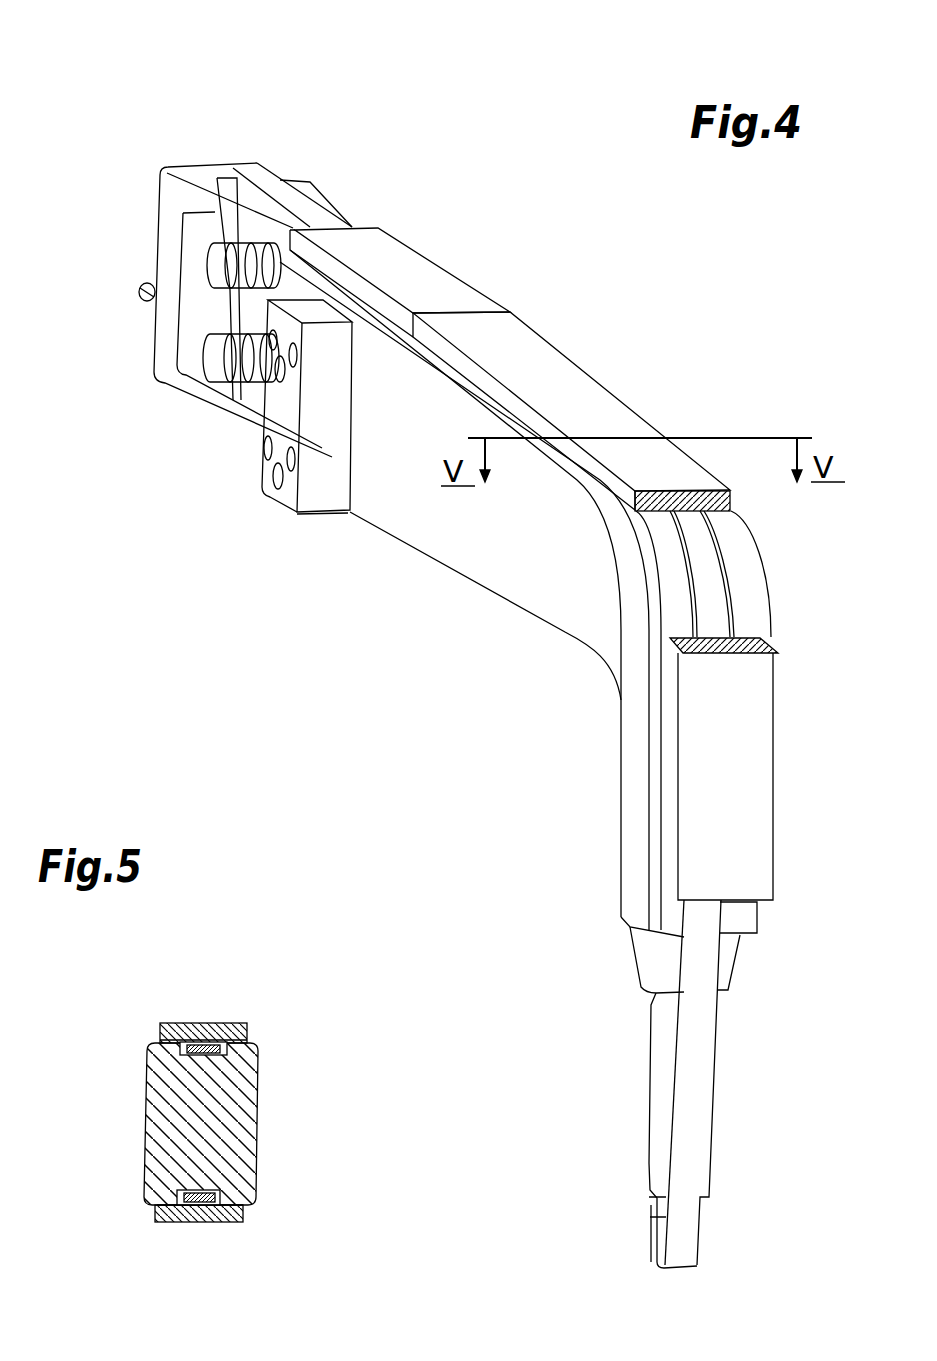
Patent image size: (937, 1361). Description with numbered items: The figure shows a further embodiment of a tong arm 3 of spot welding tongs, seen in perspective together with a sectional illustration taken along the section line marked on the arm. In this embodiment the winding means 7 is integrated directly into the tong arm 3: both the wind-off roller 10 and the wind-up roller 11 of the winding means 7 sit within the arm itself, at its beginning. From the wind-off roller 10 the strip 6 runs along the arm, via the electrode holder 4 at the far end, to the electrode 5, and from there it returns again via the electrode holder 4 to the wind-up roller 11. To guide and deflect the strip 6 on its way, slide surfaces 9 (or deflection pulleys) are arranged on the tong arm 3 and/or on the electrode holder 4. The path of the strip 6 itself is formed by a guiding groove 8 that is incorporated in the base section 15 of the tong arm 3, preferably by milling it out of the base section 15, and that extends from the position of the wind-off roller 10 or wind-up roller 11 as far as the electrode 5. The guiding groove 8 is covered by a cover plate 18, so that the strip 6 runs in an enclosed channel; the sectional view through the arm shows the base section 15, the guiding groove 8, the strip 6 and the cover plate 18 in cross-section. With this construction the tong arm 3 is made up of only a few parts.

In FIG. 4, the tong arm 3 is at (316, 584).
In FIG. 4, the electrode holder 4 is at (658, 962).
In FIG. 4, the electrode 5 is at (657, 1228).
In FIG. 4, the strip 6 is at (232, 200).
In FIG. 5, the strip 6 is at (202, 1047).
In FIG. 4, the winding means 7 is at (163, 431).
In FIG. 4, the guiding groove 8 is at (703, 595).
In FIG. 5, the guiding groove 8 is at (166, 1038).
In FIG. 4, the slide surfaces 9 is at (260, 201).
In FIG. 5, the slide surfaces 9 is at (230, 1043).
In FIG. 4, the wind-off roller 10 is at (212, 265).
In FIG. 4, the wind-up roller 11 is at (210, 357).
In FIG. 4, the base section 15 is at (181, 138).
In FIG. 5, the base section 15 is at (202, 1135).
In FIG. 4, the cover plate 18 is at (418, 282).
In FIG. 5, the cover plate 18 is at (222, 1033).